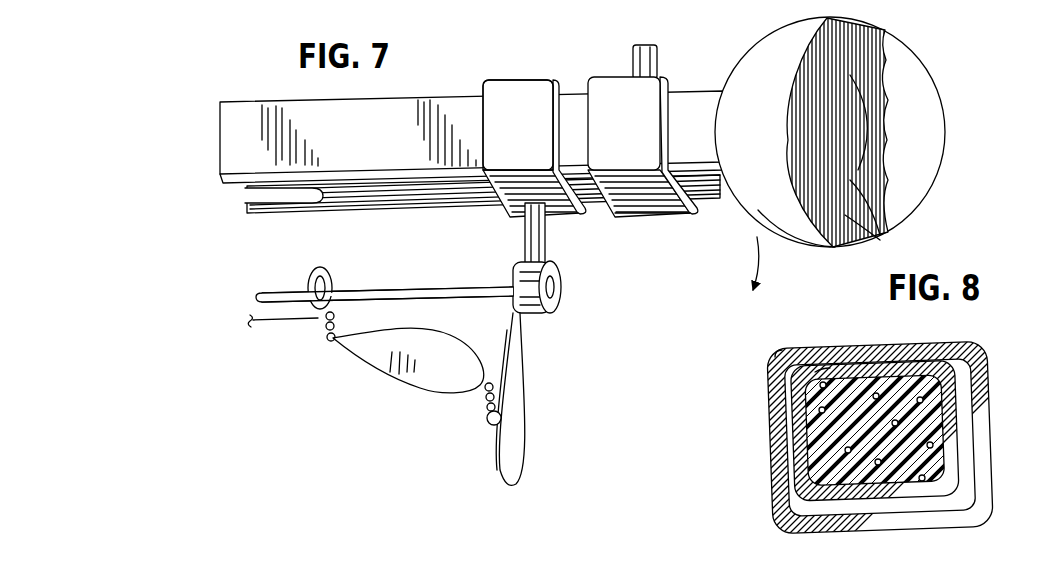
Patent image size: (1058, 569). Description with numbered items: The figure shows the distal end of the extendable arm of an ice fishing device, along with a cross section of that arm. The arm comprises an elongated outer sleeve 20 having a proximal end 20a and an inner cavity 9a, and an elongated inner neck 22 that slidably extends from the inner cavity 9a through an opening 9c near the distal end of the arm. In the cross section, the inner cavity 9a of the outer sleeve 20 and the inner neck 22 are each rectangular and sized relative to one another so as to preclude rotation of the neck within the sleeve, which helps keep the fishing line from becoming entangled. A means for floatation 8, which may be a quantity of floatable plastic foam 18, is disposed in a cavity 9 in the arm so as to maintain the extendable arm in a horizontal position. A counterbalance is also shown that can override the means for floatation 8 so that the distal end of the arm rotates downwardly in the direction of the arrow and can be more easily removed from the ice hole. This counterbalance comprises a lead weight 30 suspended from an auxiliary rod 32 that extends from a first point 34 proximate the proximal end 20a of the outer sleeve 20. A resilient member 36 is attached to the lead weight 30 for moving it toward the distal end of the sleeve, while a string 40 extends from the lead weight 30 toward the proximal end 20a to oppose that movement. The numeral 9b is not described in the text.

In FIG. 7, the means for floatation 8 is at (763, 62).
In FIG. 8, the cavity 9 is at (832, 372).
In FIG. 8, the inner cavity 9a is at (797, 351).
In FIG. 7, the first clip 9b is at (534, 148).
In FIG. 7, the opening 9c is at (707, 193).
In FIG. 8, the floatable plastic foam 18 is at (893, 380).
In FIG. 7, the elongated outer sleeve 20 is at (420, 96).
In FIG. 8, the elongated outer sleeve 20 is at (772, 438).
In FIG. 7, the proximal end of outer sleeve 20a is at (641, 222).
In FIG. 8, the elongated inner neck 22 is at (790, 465).
In FIG. 7, the lead weight 30 is at (447, 390).
In FIG. 7, the auxiliary rod 32 is at (477, 287).
In FIG. 7, the first point 34 is at (537, 258).
In FIG. 7, the resilient member 36 is at (525, 447).
In FIG. 7, the string 40 is at (288, 322).